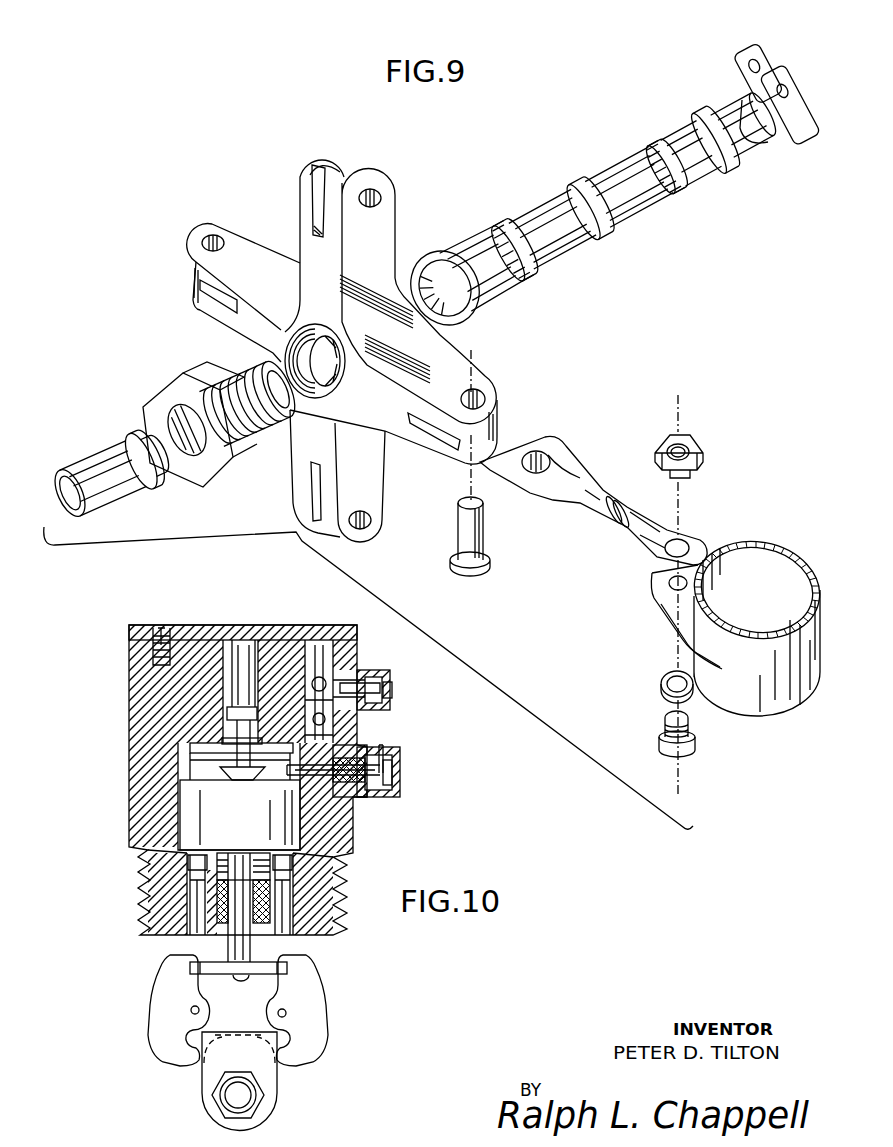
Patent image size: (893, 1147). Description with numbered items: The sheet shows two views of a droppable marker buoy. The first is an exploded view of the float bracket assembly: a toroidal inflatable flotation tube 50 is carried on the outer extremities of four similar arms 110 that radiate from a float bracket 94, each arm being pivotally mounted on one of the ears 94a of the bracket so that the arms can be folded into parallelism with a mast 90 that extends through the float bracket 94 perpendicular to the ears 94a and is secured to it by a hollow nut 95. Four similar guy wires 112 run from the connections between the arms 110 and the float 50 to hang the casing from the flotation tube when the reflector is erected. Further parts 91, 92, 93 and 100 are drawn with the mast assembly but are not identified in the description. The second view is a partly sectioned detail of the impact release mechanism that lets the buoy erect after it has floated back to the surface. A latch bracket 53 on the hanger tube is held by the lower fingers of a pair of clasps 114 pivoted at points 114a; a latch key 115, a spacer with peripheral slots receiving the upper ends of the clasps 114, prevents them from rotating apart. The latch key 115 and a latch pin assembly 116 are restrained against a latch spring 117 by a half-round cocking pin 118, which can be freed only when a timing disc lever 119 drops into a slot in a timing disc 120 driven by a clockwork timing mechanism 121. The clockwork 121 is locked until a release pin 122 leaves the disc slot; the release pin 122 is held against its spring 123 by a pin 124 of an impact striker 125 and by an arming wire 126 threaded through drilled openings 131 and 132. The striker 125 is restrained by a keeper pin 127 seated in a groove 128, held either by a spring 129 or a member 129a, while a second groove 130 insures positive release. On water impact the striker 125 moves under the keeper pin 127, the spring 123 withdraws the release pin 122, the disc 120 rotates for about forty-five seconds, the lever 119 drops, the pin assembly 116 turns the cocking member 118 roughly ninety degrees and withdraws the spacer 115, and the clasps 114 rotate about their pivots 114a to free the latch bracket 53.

In FIG. 9, the toroidal inflatable flotation tube 50 is at (789, 688).
In FIG. 10, the latch bracket 53 is at (263, 1110).
In FIG. 9, the mast 90 is at (566, 180).
In FIG. 9, the sleeve 91 is at (521, 210).
In FIG. 9, the collar ring 92 is at (631, 162).
In FIG. 9, the tube fitting 93 is at (93, 463).
In FIG. 9, the float bracket 94 is at (273, 230).
In FIG. 9, the ears 94a is at (385, 216).
In FIG. 9, the hollow nut 95 is at (167, 398).
In FIG. 9, the mounting flange 100 is at (763, 48).
In FIG. 9, the arms 110 is at (606, 490).
In FIG. 9, the guy wires 112 is at (660, 688).
In FIG. 10, the clasps 114 is at (168, 1018).
In FIG. 10, the pivot points 114a is at (190, 1008).
In FIG. 10, the latch key 115 is at (277, 945).
In FIG. 10, the latch pin assembly 116 is at (222, 739).
In FIG. 10, the latch spring 117 is at (223, 925).
In FIG. 10, the half-round cocking pin 118 is at (257, 700).
In FIG. 10, the timing disc lever 119 is at (352, 813).
In FIG. 10, the timing disc 120 is at (190, 772).
In FIG. 10, the clockwork timing mechanism 121 is at (193, 833).
In FIG. 10, the release pin 122 is at (370, 792).
In FIG. 10, the spring 123 is at (378, 750).
In FIG. 10, the pin 124 is at (347, 800).
In FIG. 10, the impact striker 125 is at (359, 635).
In FIG. 10, the arming wire 126 is at (400, 747).
In FIG. 10, the keeper pin 127 is at (355, 667).
In FIG. 10, the groove 128 is at (320, 680).
In FIG. 10, the spring 129 is at (385, 714).
In FIG. 10, the member 129a is at (393, 672).
In FIG. 10, the second groove 130 is at (345, 715).
In FIG. 10, the drilled opening 131 is at (392, 676).
In FIG. 10, the drilled opening 132 is at (383, 797).